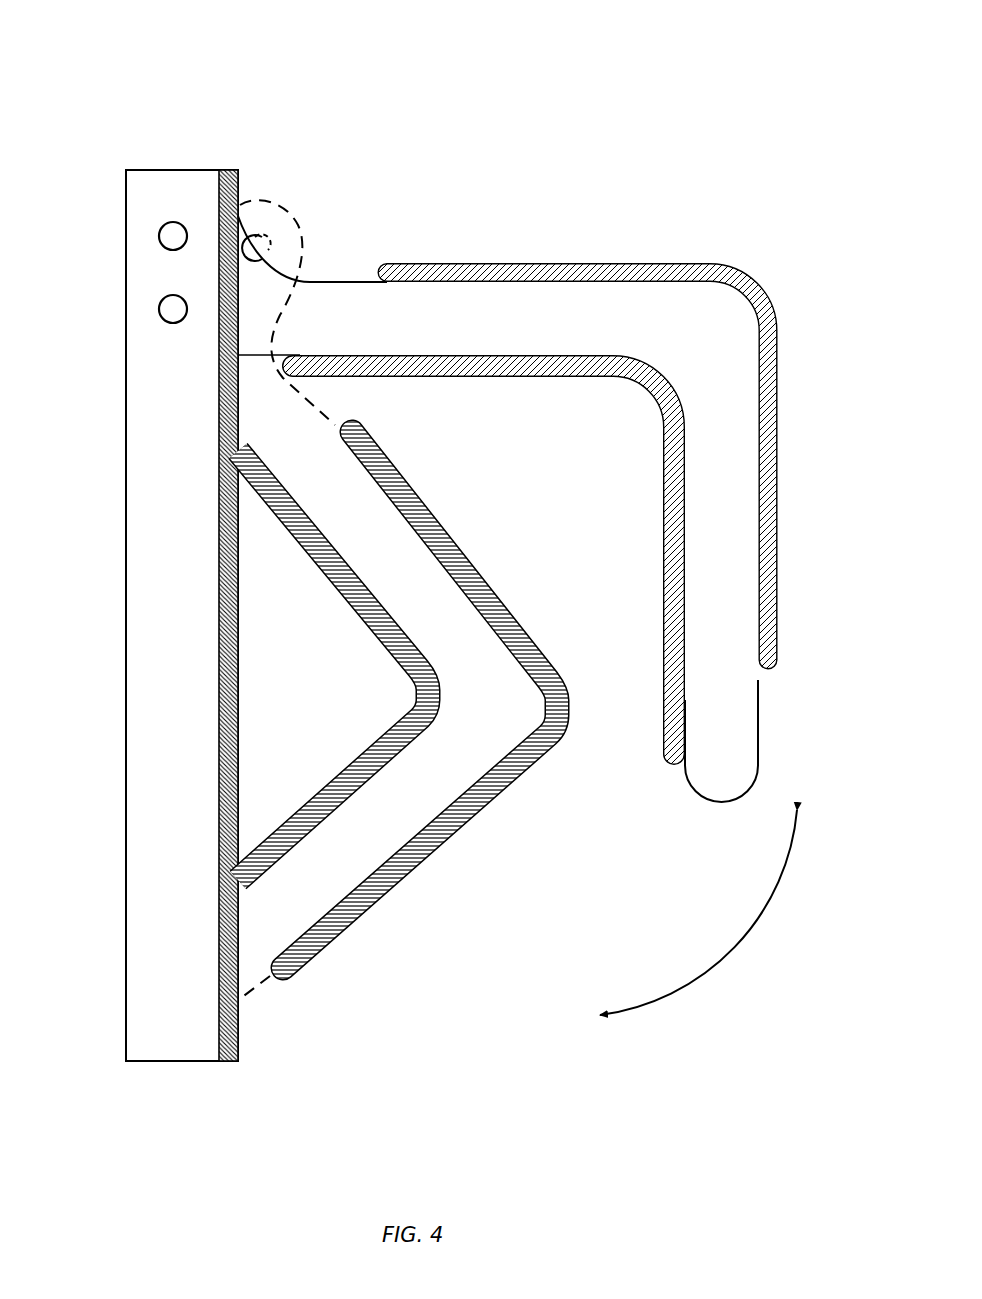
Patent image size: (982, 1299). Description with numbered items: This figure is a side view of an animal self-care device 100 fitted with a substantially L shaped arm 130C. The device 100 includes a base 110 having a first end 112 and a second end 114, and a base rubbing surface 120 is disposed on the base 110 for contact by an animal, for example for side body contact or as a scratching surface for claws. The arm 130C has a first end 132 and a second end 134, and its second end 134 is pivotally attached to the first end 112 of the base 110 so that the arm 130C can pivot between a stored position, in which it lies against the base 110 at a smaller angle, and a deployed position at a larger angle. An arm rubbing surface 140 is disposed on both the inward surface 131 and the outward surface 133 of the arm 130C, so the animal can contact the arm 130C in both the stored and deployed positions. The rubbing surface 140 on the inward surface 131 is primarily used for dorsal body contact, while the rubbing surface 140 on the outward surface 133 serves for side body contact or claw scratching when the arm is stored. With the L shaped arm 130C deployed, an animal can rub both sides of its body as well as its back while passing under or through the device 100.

The animal self-care device 100 is at (137, 62).
The base 110 is at (148, 634).
The first end of the base 112 is at (104, 180).
The second end of the base 114 is at (104, 1024).
The base rubbing surface 120 is at (238, 1061).
The substantially L shaped arm 130C is at (556, 497).
The inward surface of the arm 131 is at (672, 520).
The first end of the arm 132 is at (355, 224).
The outward surface of the arm 133 is at (758, 353).
The second end of the arm 134 is at (796, 714).
The arm rubbing surface 140 is at (708, 263).